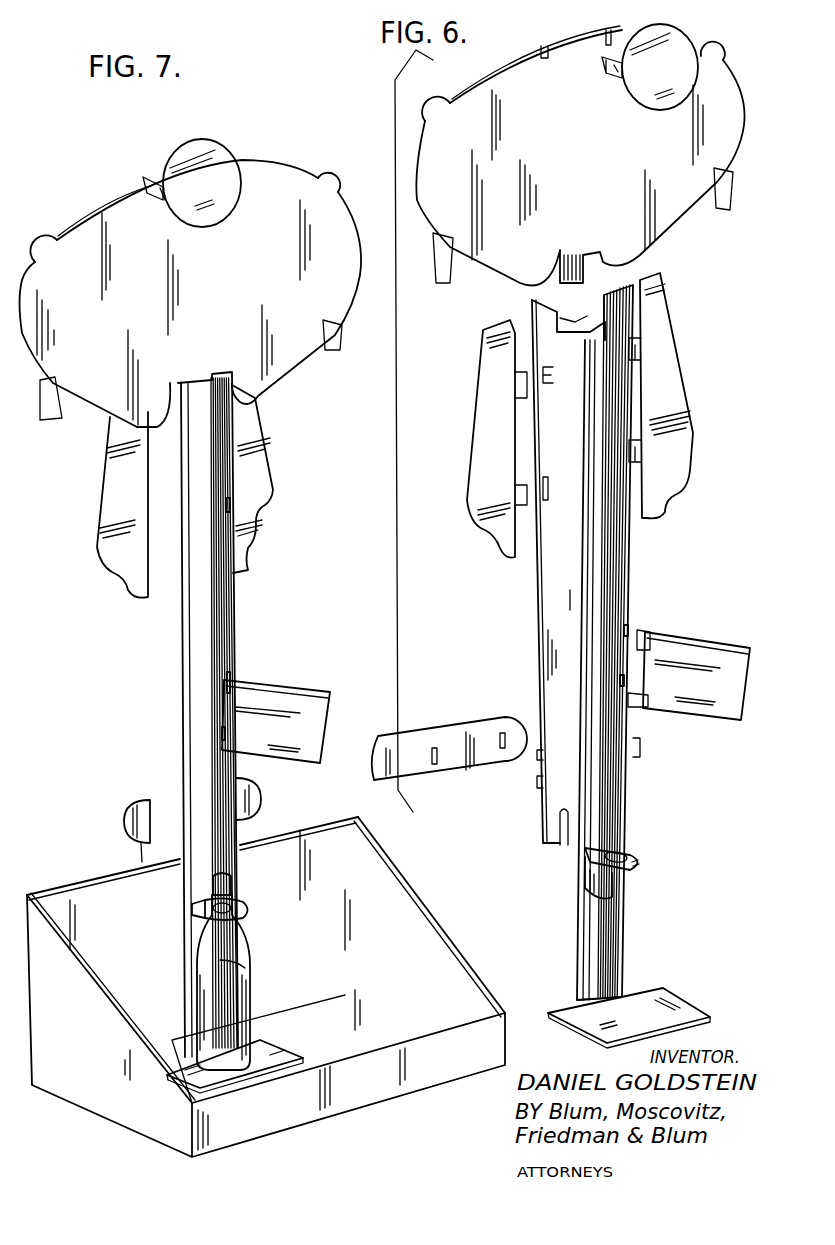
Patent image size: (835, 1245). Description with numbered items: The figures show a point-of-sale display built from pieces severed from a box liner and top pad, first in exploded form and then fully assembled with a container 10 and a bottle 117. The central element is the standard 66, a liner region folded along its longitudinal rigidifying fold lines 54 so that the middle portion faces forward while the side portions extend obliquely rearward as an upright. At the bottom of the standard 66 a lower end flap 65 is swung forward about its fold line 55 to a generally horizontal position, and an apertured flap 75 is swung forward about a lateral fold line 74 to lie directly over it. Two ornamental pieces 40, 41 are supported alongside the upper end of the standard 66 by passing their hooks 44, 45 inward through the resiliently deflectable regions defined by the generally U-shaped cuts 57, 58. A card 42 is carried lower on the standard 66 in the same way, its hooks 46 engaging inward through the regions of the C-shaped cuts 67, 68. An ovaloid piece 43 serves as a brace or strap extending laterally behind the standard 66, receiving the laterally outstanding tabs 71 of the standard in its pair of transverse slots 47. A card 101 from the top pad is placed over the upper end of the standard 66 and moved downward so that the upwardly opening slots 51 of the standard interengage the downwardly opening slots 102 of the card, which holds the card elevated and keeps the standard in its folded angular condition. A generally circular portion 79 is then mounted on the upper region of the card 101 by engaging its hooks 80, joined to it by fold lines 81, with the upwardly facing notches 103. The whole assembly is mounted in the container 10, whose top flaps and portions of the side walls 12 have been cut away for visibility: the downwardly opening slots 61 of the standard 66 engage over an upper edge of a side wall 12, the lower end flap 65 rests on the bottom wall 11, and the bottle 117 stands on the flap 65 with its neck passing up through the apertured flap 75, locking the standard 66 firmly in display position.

In FIG. 7, the container 10 is at (403, 1108).
In FIG. 7, the bottom wall 11 is at (387, 1033).
In FIG. 7, the side walls 12 is at (288, 850).
In FIG. 7, the piece 40 is at (257, 472).
In FIG. 6, the piece 40 is at (685, 395).
In FIG. 7, the piece 41 is at (108, 490).
In FIG. 6, the piece 41 is at (484, 447).
In FIG. 7, the card 42 is at (290, 695).
In FIG. 6, the card 42 is at (720, 653).
In FIG. 7, the piece 43 is at (125, 828).
In FIG. 6, the piece 43 is at (455, 738).
In FIG. 6, the hooks 44 is at (640, 352).
In FIG. 6, the hooks 45 is at (520, 385).
In FIG. 6, the hooks 46 is at (648, 645).
In FIG. 6, the slots 47 is at (434, 766).
In FIG. 6, the slots 51 is at (604, 324).
In FIG. 6, the fold lines 54 is at (600, 548).
In FIG. 6, the fold line 55 is at (606, 1005).
In FIG. 6, the U-shaped cut 57 is at (618, 345).
In FIG. 7, the U-shaped cut 58 is at (228, 505).
In FIG. 6, the U-shaped cut 58 is at (550, 482).
In FIG. 6, the slots 61 is at (557, 825).
In FIG. 7, the flap 65 is at (292, 1062).
In FIG. 6, the flap 65 is at (677, 1010).
In FIG. 7, the standard 66 is at (147, 627).
In FIG. 6, the standard 66 is at (551, 563).
In FIG. 7, the C-shaped cut 67 is at (227, 677).
In FIG. 6, the C-shaped cut 67 is at (624, 630).
In FIG. 7, the C-shaped cut 68 is at (222, 732).
In FIG. 6, the C-shaped cut 68 is at (620, 681).
In FIG. 7, the tab 71 is at (235, 798).
In FIG. 6, the tab 71 is at (540, 767).
In FIG. 7, the fold line 74 is at (194, 905).
In FIG. 6, the fold line 74 is at (602, 847).
In FIG. 7, the flap 75 is at (242, 906).
In FIG. 6, the flap 75 is at (645, 861).
In FIG. 7, the circular portion 79 is at (222, 157).
In FIG. 6, the circular portion 79 is at (670, 35).
In FIG. 7, the hooks 80 is at (157, 200).
In FIG. 6, the hooks 80 is at (601, 70).
In FIG. 7, the fold lines 81 is at (165, 210).
In FIG. 6, the fold lines 81 is at (620, 76).
In FIG. 7, the card 101 is at (278, 236).
In FIG. 6, the card 101 is at (545, 126).
In FIG. 6, the slots 102 is at (566, 246).
In FIG. 6, the notches 103 is at (608, 36).
In FIG. 7, the bottle 117 is at (243, 997).